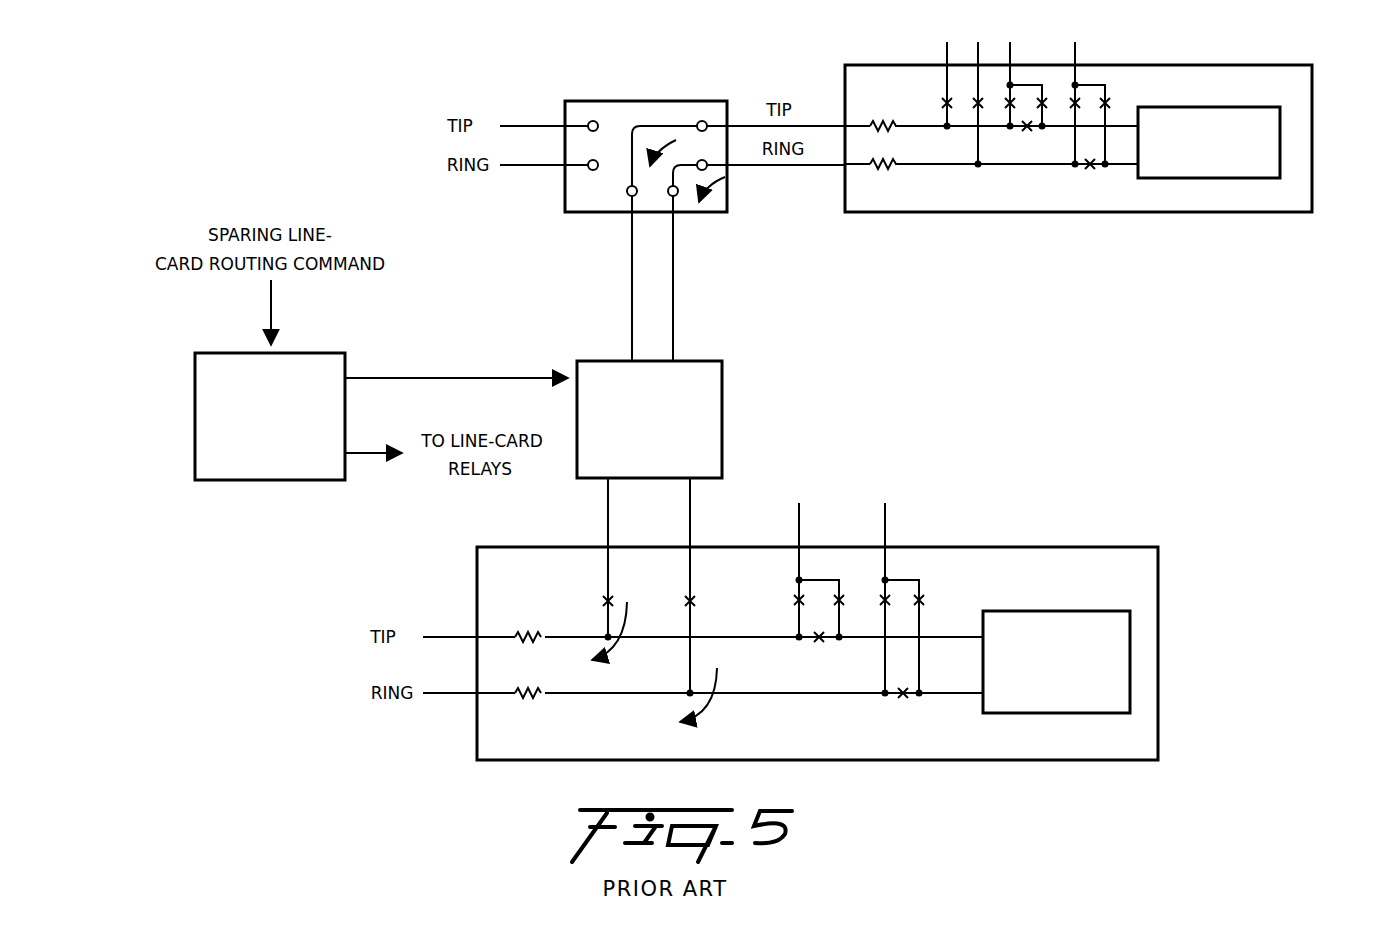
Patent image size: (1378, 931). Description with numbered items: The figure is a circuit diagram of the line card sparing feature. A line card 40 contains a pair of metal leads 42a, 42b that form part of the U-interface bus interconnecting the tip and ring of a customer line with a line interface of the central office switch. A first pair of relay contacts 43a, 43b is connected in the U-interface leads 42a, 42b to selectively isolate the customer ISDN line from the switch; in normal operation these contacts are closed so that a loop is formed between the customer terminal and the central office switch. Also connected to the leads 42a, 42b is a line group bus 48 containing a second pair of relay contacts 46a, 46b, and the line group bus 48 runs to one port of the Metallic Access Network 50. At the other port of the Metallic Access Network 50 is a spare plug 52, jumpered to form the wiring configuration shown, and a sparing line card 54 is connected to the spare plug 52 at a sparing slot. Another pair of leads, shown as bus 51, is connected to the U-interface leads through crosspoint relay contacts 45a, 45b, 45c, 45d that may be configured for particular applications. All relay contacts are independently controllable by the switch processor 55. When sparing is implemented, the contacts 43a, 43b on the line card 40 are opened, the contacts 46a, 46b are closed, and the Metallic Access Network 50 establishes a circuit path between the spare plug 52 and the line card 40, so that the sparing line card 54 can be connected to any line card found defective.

The line card 40 is at (813, 652).
The metal lead 42a is at (753, 637).
The metal lead 42b is at (838, 697).
The relay contact 43a is at (821, 642).
The relay contact 43b is at (904, 699).
The relay contact (crosspoint) 45a is at (792, 598).
The relay contact (crosspoint) 45b is at (845, 598).
The relay contact (crosspoint) 45c is at (879, 600).
The relay contact (crosspoint) 45d is at (926, 600).
The relay contact 46a is at (600, 601).
The relay contact 46b is at (683, 601).
The line group bus 48 is at (636, 526).
The Metallic Access Network 50 is at (707, 418).
The sparing bus 51 is at (824, 526).
The spare plug 52 is at (706, 110).
The sparing line card 54 is at (1102, 143).
The switch processor 55 is at (245, 462).